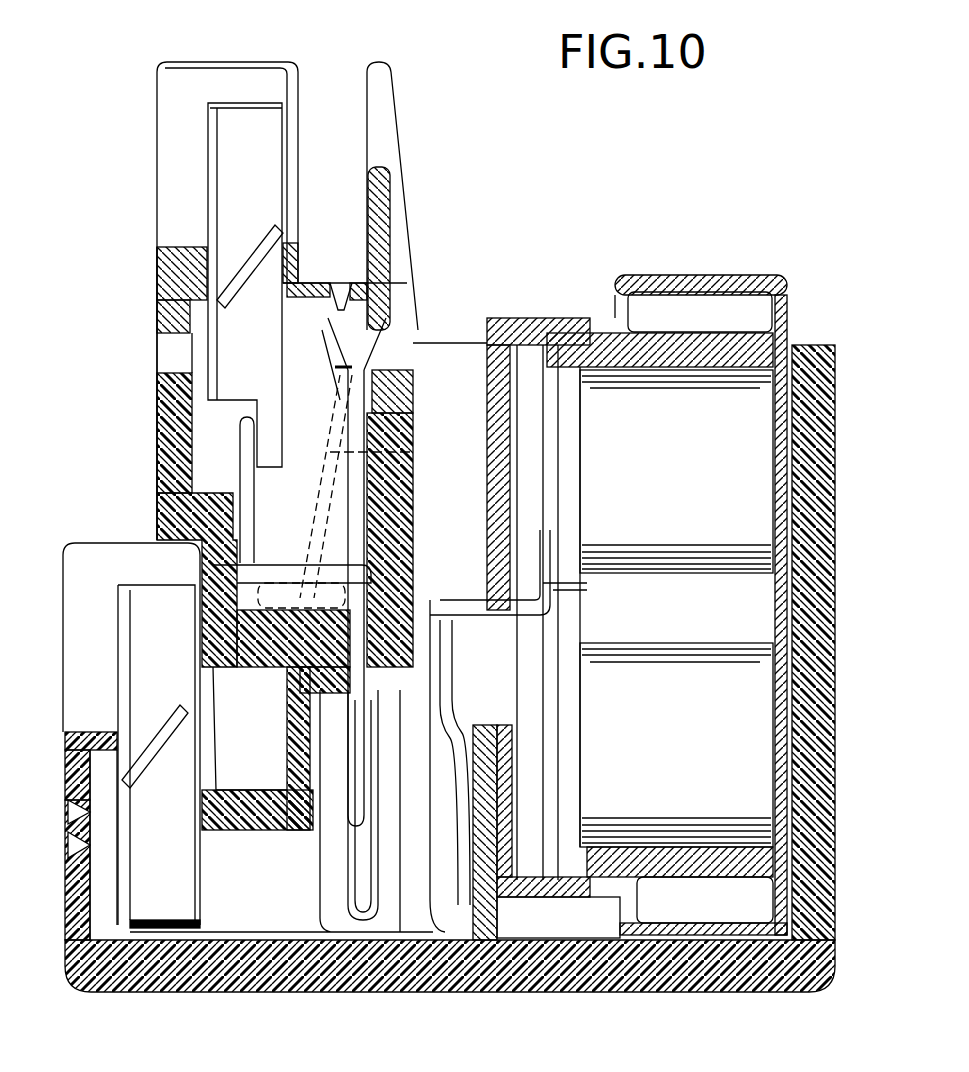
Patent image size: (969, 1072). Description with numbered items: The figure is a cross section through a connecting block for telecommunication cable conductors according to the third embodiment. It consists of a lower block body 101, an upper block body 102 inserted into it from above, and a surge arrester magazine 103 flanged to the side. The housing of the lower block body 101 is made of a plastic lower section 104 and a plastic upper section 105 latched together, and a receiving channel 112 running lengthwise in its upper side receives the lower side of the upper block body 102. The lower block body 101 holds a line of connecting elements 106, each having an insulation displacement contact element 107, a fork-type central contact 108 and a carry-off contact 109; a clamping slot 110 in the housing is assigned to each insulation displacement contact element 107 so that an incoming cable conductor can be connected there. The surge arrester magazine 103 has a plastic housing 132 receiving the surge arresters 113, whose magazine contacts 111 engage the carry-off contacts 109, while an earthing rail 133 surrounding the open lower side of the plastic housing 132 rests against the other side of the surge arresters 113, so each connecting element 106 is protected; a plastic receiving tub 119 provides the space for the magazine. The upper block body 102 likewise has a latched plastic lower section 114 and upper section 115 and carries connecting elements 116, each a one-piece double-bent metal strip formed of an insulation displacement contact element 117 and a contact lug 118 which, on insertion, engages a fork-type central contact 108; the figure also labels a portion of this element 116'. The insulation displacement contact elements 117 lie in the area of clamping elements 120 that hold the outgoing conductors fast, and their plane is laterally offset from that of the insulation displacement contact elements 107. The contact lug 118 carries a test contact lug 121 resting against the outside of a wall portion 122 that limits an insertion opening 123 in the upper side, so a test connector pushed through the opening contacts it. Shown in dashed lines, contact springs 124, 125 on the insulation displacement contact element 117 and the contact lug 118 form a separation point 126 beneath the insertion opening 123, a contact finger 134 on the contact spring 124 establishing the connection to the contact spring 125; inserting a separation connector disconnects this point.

The lower block body 101 is at (53, 940).
The upper block body 102 is at (152, 416).
The surge arrester magazine 103 is at (712, 268).
The lower section 104 is at (165, 973).
The upper section 105 is at (73, 765).
The connecting element 106 is at (244, 920).
The insulation displacement contact element 107 is at (157, 750).
The fork-type central contact 108 is at (333, 830).
The carry-off contact 109 is at (440, 897).
The clamping slot 110 is at (80, 630).
The magazine contact 111 is at (473, 610).
The receiving channel 112 is at (267, 657).
The surge arrester 113 is at (760, 490).
The lower section 114 is at (170, 463).
The upper section 115 is at (160, 298).
The connecting element 116 is at (255, 570).
The connecting wall 116' is at (417, 540).
The insulation displacement contact element 117 is at (236, 262).
The contact lug 118 is at (333, 858).
The receiving tub 119 is at (820, 760).
The clamping element 120 is at (172, 113).
The test contact lug 121 is at (320, 403).
The wall portion 122 is at (374, 280).
The insertion opening 123 is at (333, 283).
The contact spring 124 is at (307, 530).
The contact spring 125 is at (355, 397).
The separation point 126 is at (352, 368).
The plastic housing 132 is at (600, 337).
The earthing rail 133 is at (785, 300).
The contact finger 134 is at (413, 460).